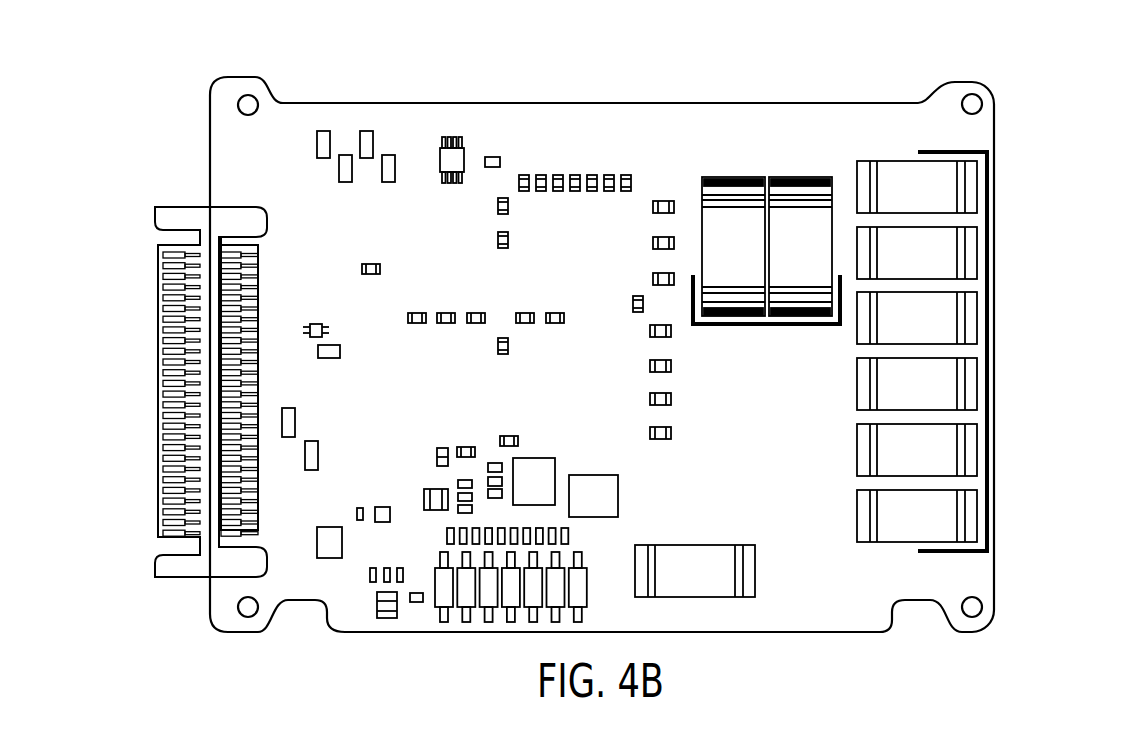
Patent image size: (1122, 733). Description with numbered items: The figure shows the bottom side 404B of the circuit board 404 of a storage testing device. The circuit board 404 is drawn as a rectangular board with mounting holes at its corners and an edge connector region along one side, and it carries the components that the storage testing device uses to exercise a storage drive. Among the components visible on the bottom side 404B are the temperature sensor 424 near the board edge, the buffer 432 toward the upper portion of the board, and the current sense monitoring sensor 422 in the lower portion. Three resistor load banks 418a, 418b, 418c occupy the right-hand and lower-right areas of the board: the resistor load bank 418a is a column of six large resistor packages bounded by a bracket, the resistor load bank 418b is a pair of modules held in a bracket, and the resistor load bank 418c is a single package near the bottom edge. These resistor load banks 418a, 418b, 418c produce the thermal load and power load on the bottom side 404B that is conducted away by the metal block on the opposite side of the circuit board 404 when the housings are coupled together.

The circuit board 404 is at (602, 336).
The bottom side of the circuit board 404B is at (674, 62).
The temperature sensor 424 is at (183, 203).
The buffer 432 is at (466, 155).
The current sense monitoring sensor 422 is at (381, 505).
The resistor load bank 418a is at (988, 352).
The resistor load bank 418b is at (767, 326).
The resistor load bank 418c is at (695, 542).